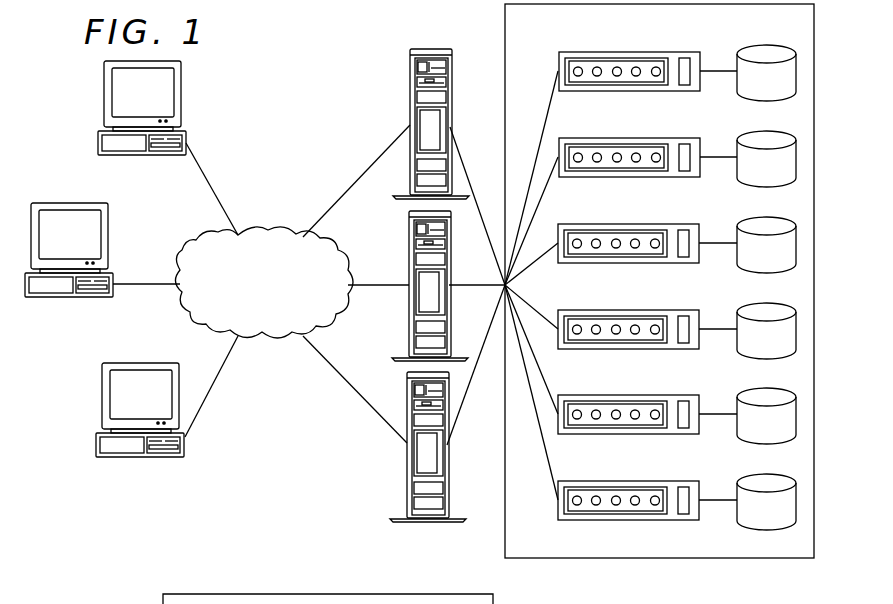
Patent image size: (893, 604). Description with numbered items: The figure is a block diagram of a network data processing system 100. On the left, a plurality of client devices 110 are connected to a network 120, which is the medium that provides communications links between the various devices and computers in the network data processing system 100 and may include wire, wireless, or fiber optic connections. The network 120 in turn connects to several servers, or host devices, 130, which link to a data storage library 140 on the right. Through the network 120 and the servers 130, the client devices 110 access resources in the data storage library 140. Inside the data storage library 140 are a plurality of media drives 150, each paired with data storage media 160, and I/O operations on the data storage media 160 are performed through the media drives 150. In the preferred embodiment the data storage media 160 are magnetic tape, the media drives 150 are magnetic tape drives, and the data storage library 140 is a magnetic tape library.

The network data processing system 100 is at (263, 68).
The client device 110 is at (142, 156).
The network 120 is at (282, 308).
The server 130 is at (410, 90).
The data storage library 140 is at (656, 559).
The media drive 150 is at (628, 92).
The data storage media 160 is at (735, 89).